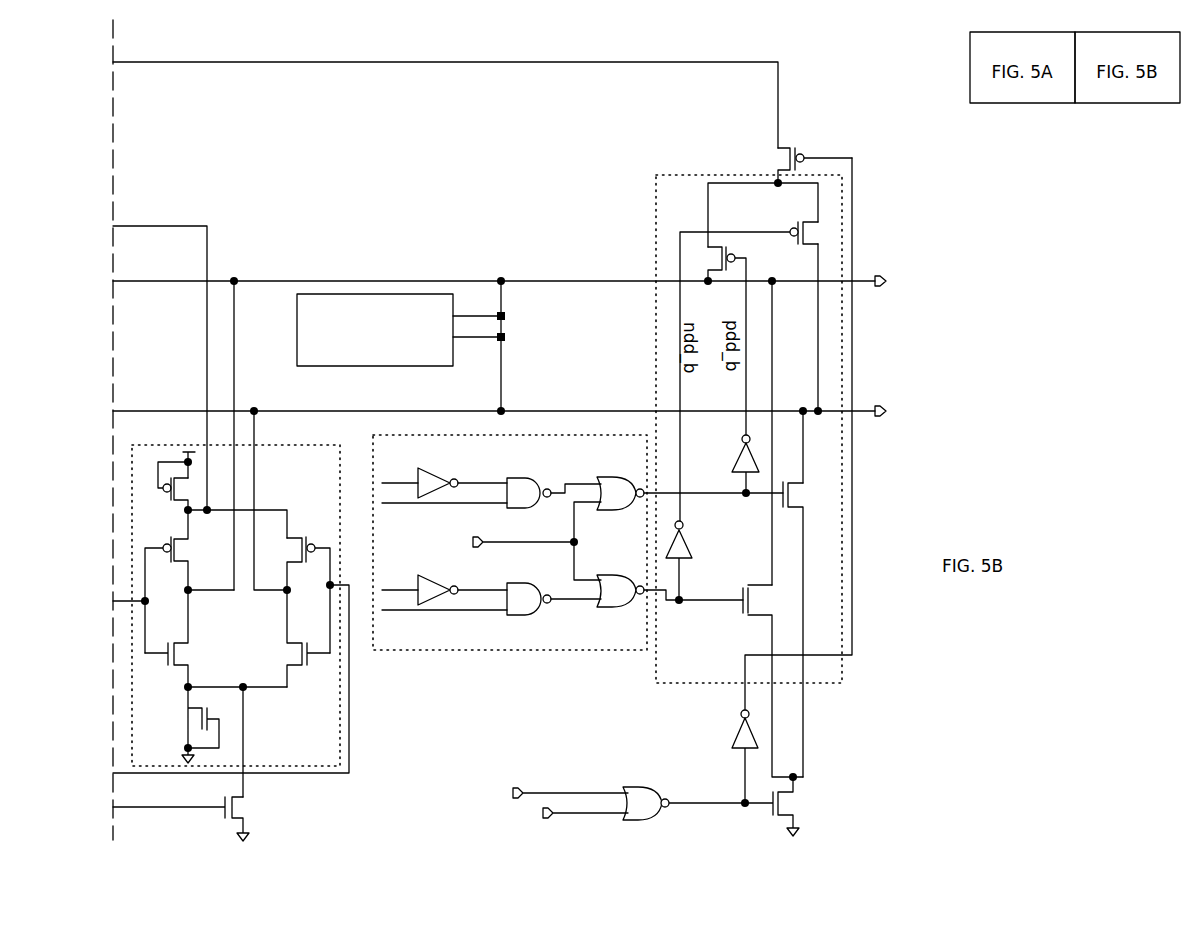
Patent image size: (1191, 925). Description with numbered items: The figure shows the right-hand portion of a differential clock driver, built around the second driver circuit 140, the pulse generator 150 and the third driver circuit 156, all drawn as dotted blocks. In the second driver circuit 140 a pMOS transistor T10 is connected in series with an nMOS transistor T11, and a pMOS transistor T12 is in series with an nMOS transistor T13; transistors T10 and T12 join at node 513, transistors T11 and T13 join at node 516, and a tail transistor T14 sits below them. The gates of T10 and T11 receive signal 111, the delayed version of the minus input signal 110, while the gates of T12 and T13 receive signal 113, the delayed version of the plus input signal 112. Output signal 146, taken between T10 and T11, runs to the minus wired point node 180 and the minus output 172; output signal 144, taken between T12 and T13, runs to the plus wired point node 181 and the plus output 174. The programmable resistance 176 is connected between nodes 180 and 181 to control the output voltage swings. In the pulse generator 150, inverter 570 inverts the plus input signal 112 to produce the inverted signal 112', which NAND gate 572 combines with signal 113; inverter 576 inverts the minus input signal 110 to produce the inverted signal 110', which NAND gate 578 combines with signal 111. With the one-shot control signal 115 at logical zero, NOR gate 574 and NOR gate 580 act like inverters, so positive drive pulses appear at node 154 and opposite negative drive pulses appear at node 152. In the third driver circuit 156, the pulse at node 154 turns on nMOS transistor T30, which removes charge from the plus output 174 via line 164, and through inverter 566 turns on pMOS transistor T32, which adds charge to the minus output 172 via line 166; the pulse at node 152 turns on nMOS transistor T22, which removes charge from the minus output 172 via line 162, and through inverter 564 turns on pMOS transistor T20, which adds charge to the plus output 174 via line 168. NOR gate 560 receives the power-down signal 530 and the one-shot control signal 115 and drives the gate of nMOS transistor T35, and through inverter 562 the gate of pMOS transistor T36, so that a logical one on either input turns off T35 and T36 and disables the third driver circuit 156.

The second driver circuit 140 is at (182, 443).
The output signal 144 is at (255, 430).
The output signal 146 is at (237, 337).
The node 513 is at (207, 506).
The node 516 is at (243, 684).
The signal 111 is at (145, 630).
The signal 113 is at (341, 716).
The in_m input signal 110 is at (398, 572).
The inverted in_m signal 110' is at (482, 572).
The in_p input signal 112 is at (398, 465).
The inverted in_p signal 112' is at (482, 465).
The oneshot_b signal 115 is at (477, 538).
The pulse generator 150 is at (516, 652).
The inverter 570 is at (435, 476).
The NAND gate 572 is at (528, 478).
The NOR gate 574 is at (612, 477).
The inverter 576 is at (435, 583).
The NAND gate 578 is at (545, 608).
The NOR gate 580 is at (613, 574).
The node 152 is at (679, 603).
The node 154 is at (746, 497).
The third driver circuit 156 is at (676, 175).
The line 162 is at (772, 350).
The line 164 is at (805, 471).
The line 166 is at (705, 280).
The line 168 is at (818, 303).
The out_m output 172 is at (866, 281).
The out_p output 174 is at (863, 413).
The programmable resistance 176 is at (318, 368).
The minus wired point node 180 is at (501, 279).
The plus wired point node 181 is at (503, 409).
The pwr_down signal 530 is at (413, 792).
The NOR gate 560 is at (640, 786).
The inverter 562 is at (733, 733).
The inverter 564 is at (690, 547).
The inverter 566 is at (735, 455).
The pMOS transistor T10 is at (184, 581).
The nMOS transistor T11 is at (183, 638).
The pMOS transistor T12 is at (308, 583).
The nMOS transistor T13 is at (292, 638).
The transistor T14 is at (196, 819).
The pMOS transistor T20 is at (749, 359).
The nMOS transistor T22 is at (773, 683).
The nMOS transistor T30 is at (809, 629).
The pMOS transistor T32 is at (736, 336).
The nMOS transistor T35 is at (748, 806).
The pMOS transistor T36 is at (815, 155).